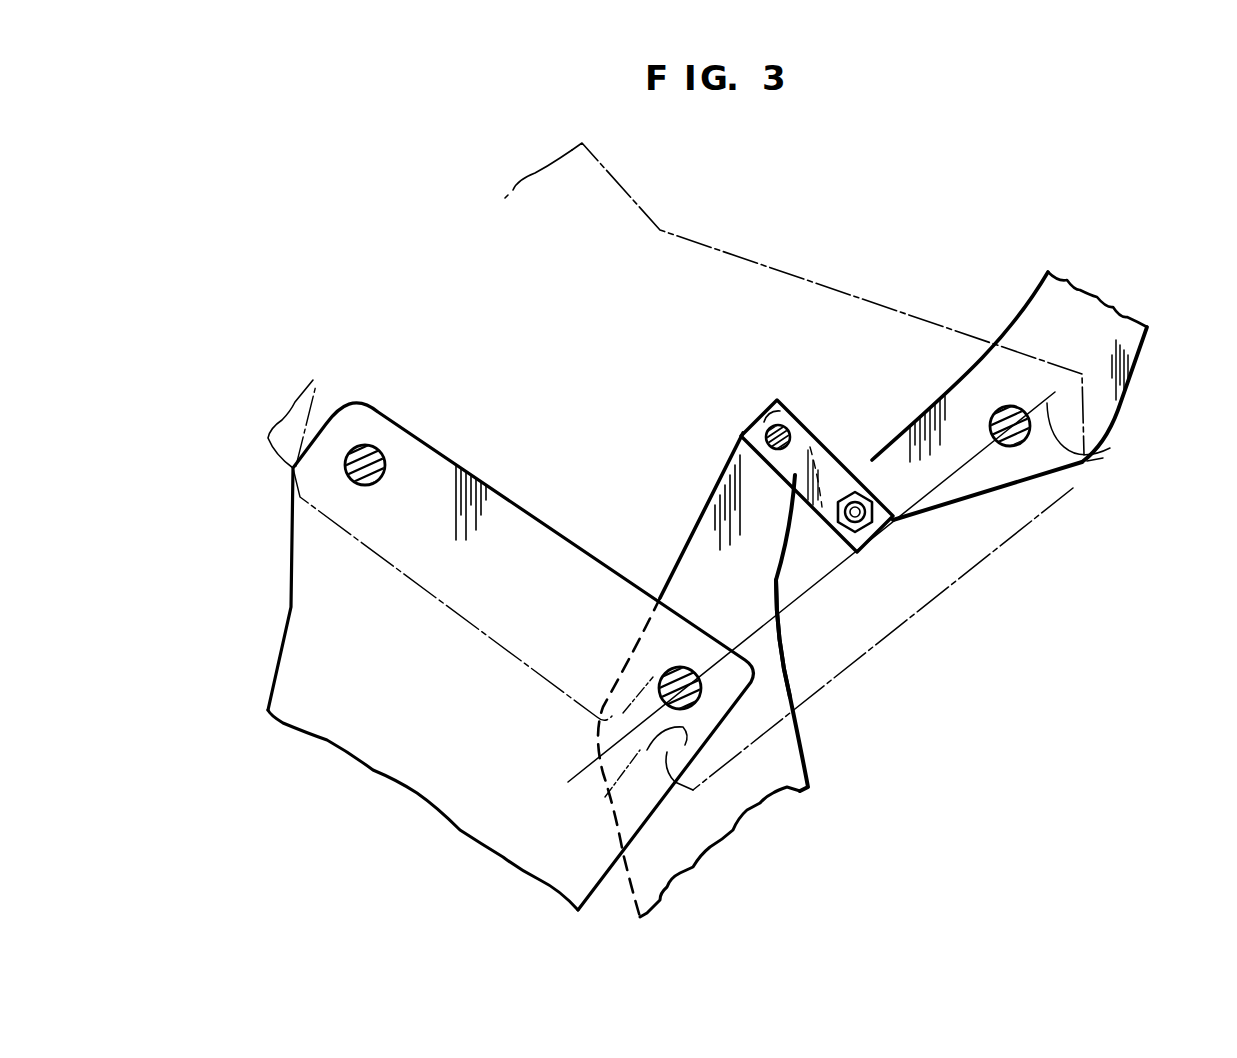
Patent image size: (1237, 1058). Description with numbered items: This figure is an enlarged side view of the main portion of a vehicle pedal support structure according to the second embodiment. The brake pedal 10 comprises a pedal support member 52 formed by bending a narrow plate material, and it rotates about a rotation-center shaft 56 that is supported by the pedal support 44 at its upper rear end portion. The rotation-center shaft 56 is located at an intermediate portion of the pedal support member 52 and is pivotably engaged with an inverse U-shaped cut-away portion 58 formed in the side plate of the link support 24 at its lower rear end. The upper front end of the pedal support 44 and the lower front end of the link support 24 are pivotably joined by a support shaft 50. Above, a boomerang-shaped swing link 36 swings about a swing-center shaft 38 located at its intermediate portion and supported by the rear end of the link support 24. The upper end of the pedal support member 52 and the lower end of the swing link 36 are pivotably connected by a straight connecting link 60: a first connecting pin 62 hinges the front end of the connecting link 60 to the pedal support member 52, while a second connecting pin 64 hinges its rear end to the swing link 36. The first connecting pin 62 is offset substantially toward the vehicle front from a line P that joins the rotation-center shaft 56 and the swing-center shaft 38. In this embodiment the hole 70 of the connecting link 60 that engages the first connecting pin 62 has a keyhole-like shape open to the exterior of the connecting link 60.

The brake pedal 10 is at (778, 797).
The link support 24 is at (846, 288).
The swing link 36 is at (1136, 378).
The swing-center shaft 38 is at (1011, 445).
The pedal support 44 is at (278, 668).
The support shaft 50 is at (378, 478).
The pedal support member 52 is at (783, 767).
The rotation-center shaft 56 is at (680, 670).
The cut-away portion 58 is at (643, 750).
The connecting link 60 is at (834, 445).
The first connecting pin 62 is at (789, 425).
The second connecting pin 64 is at (856, 495).
The hole 70 is at (766, 407).
The line P is at (1109, 452).